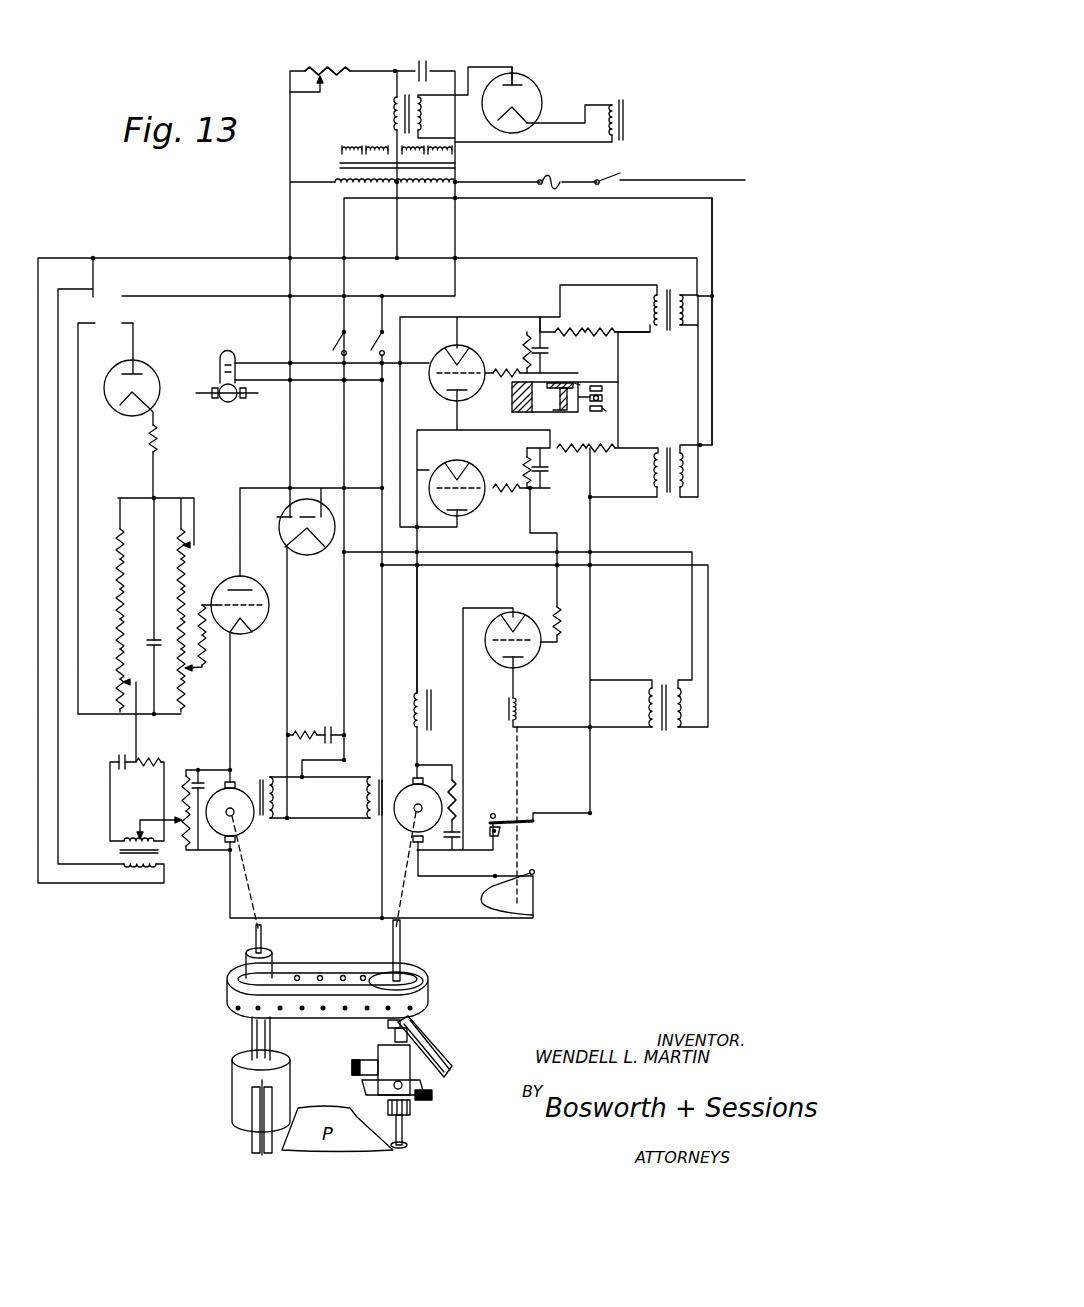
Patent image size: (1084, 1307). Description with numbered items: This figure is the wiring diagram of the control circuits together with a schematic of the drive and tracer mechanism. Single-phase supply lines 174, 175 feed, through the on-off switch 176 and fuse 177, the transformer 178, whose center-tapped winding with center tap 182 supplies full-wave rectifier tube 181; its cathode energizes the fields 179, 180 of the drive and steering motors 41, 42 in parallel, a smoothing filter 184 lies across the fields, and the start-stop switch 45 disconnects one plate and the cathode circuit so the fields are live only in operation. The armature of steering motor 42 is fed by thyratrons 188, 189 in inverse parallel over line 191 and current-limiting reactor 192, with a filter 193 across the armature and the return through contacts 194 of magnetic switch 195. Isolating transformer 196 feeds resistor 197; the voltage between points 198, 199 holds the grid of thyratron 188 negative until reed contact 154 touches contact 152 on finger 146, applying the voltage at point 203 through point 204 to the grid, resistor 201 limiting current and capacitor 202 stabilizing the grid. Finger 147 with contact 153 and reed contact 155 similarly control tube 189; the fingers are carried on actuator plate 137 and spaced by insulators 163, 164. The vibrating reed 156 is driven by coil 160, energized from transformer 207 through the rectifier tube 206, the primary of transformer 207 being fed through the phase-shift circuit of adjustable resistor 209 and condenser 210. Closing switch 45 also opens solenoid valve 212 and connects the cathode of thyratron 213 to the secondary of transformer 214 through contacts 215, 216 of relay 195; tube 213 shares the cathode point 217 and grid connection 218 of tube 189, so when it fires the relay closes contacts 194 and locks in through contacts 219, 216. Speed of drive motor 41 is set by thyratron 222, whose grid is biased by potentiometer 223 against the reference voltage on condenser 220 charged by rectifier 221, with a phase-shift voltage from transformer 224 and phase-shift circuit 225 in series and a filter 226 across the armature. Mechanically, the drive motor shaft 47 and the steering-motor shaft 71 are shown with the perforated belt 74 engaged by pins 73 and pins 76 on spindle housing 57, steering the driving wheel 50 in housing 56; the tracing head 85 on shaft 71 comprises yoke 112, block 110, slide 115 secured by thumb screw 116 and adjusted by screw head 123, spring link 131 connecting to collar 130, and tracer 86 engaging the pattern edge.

The adjustable resistor 209 is at (325, 66).
The condenser 210 is at (430, 64).
The transformer 207 is at (399, 94).
The rectifier tube 206 is at (524, 82).
The coil 160 is at (620, 100).
The fuse 177 is at (549, 178).
The on-off switch 176 is at (616, 174).
The power supply line 175 is at (382, 470).
The power supply line 174 is at (344, 470).
The center tap 182 is at (380, 185).
The transformer 178 is at (408, 188).
The start-stop switch 45 is at (346, 331).
The solenoid valve 212 is at (221, 368).
The rectifier 221 is at (160, 398).
The point of resistor 198 is at (556, 332).
The resistor 197 is at (572, 330).
The point of resistor 199 is at (582, 330).
The point of resistor 203 is at (612, 330).
The isolating transformer 196 is at (660, 298).
The resistor 201 is at (525, 340).
The capacitor 202 is at (545, 350).
The point 204 is at (505, 370).
The spring contact finger 146 is at (578, 383).
The insulator 163 is at (582, 385).
The contact 152 is at (602, 387).
The reed contact 154 is at (602, 396).
The vibrating reed 156 is at (602, 400).
The reed contact 155 is at (602, 407).
The contact 153 is at (604, 410).
The thyratron 188 is at (442, 392).
The actuator plate 137 is at (525, 415).
The spring contact finger 147 is at (557, 410).
The insulator 164 is at (556, 411).
The thyratron 189 is at (475, 462).
The center point of resistor 217 is at (578, 455).
The grid connection 218 is at (531, 490).
The full-wave rectifier tube 181 is at (306, 548).
The condenser 220 is at (118, 634).
The thyratron 222 is at (242, 628).
The potentiometer 223 is at (197, 673).
The line 191 is at (418, 600).
The thyratron 213 is at (520, 616).
The current limiting reactor 192 is at (420, 690).
The smoothing filter 184 is at (326, 727).
The field 179 is at (265, 775).
The steering motor 42 is at (410, 795).
The filter 193 is at (455, 790).
The relay contact 219 is at (497, 814).
The phase shift circuit 225 is at (110, 795).
The drive motor 41 is at (232, 855).
The field 180 is at (372, 825).
The relay contact 216 is at (535, 822).
The relay contact 215 is at (502, 830).
The magnetic switch 195 is at (534, 872).
The contacts 194 is at (535, 905).
The filter 226 is at (190, 850).
The transformer 224 is at (155, 868).
The transformer 214 is at (660, 730).
The vertical shaft 47 is at (255, 945).
The perforated belt 74 is at (332, 972).
The pins 73 is at (420, 983).
The pins 76 is at (232, 1008).
The spindle housing 57 is at (252, 1036).
The housing 56 is at (232, 1090).
The friction driving wheel 50 is at (258, 1150).
The collar 130 is at (388, 1026).
The block 110 is at (380, 1060).
The head 123 is at (352, 1067).
The slide 115 is at (365, 1090).
The steering motor shaft 71 is at (406, 1026).
The link 131 is at (420, 1032).
The yoke 112 is at (426, 1062).
The thumb screw 116 is at (433, 1095).
The tracing head 85 is at (420, 1105).
The tracer 86 is at (404, 1138).